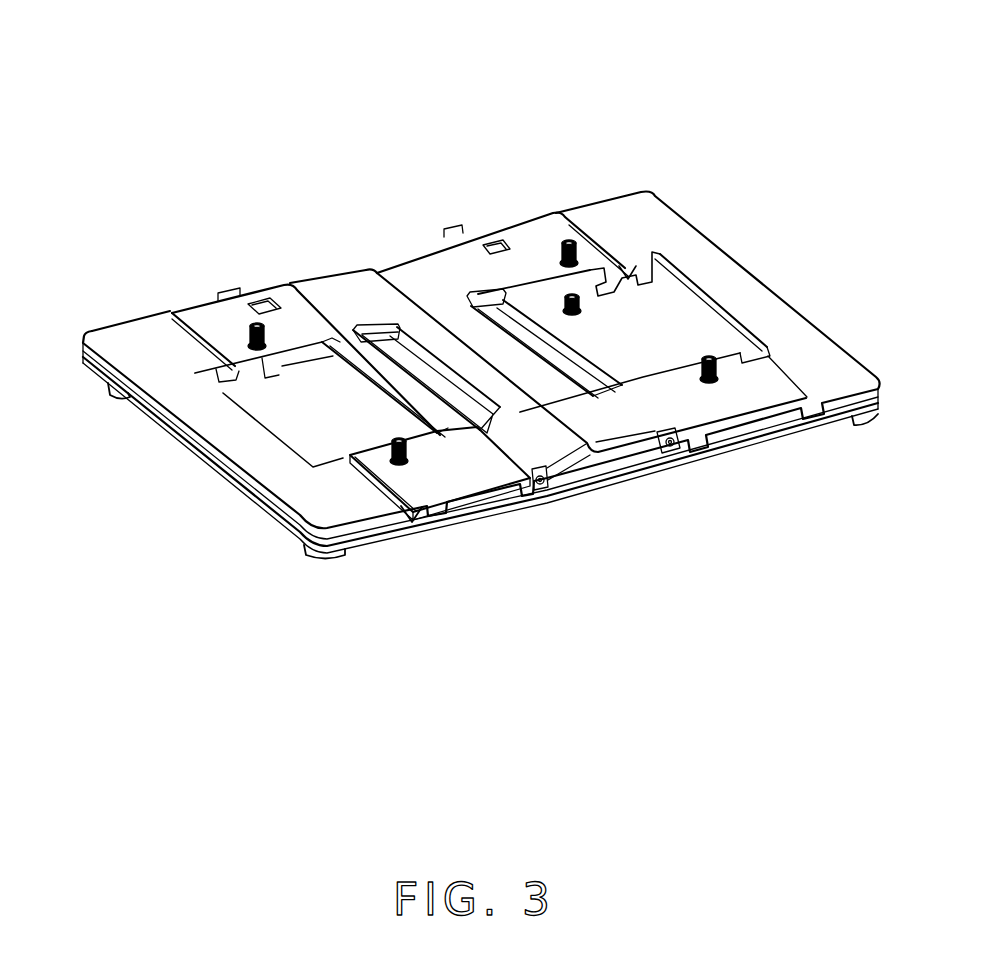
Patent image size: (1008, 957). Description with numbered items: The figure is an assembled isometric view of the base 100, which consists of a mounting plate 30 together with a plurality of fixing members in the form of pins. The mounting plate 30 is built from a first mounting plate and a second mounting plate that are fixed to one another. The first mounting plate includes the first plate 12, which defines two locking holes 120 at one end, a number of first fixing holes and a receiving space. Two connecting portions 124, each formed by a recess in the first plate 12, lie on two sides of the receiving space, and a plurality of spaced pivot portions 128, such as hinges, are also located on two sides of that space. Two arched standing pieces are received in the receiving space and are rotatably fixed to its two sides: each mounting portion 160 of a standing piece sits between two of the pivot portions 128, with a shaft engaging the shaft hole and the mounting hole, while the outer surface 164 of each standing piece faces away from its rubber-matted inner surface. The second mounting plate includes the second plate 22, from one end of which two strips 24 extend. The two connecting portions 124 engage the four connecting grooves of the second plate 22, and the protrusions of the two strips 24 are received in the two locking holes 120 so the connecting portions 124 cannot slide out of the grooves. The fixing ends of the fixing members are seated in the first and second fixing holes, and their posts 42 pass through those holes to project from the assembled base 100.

The base 100 is at (459, 296).
The first plate 12 is at (132, 328).
The second plate 22 is at (100, 372).
The mounting plate 30 is at (117, 400).
The locking hole 120 is at (492, 236).
The strip 24 is at (448, 231).
The outer surface 164 is at (343, 290).
The mounting portion 160 is at (320, 298).
The post 42 is at (568, 245).
The connecting portion 124 is at (418, 508).
The pivot portion 128 is at (542, 482).